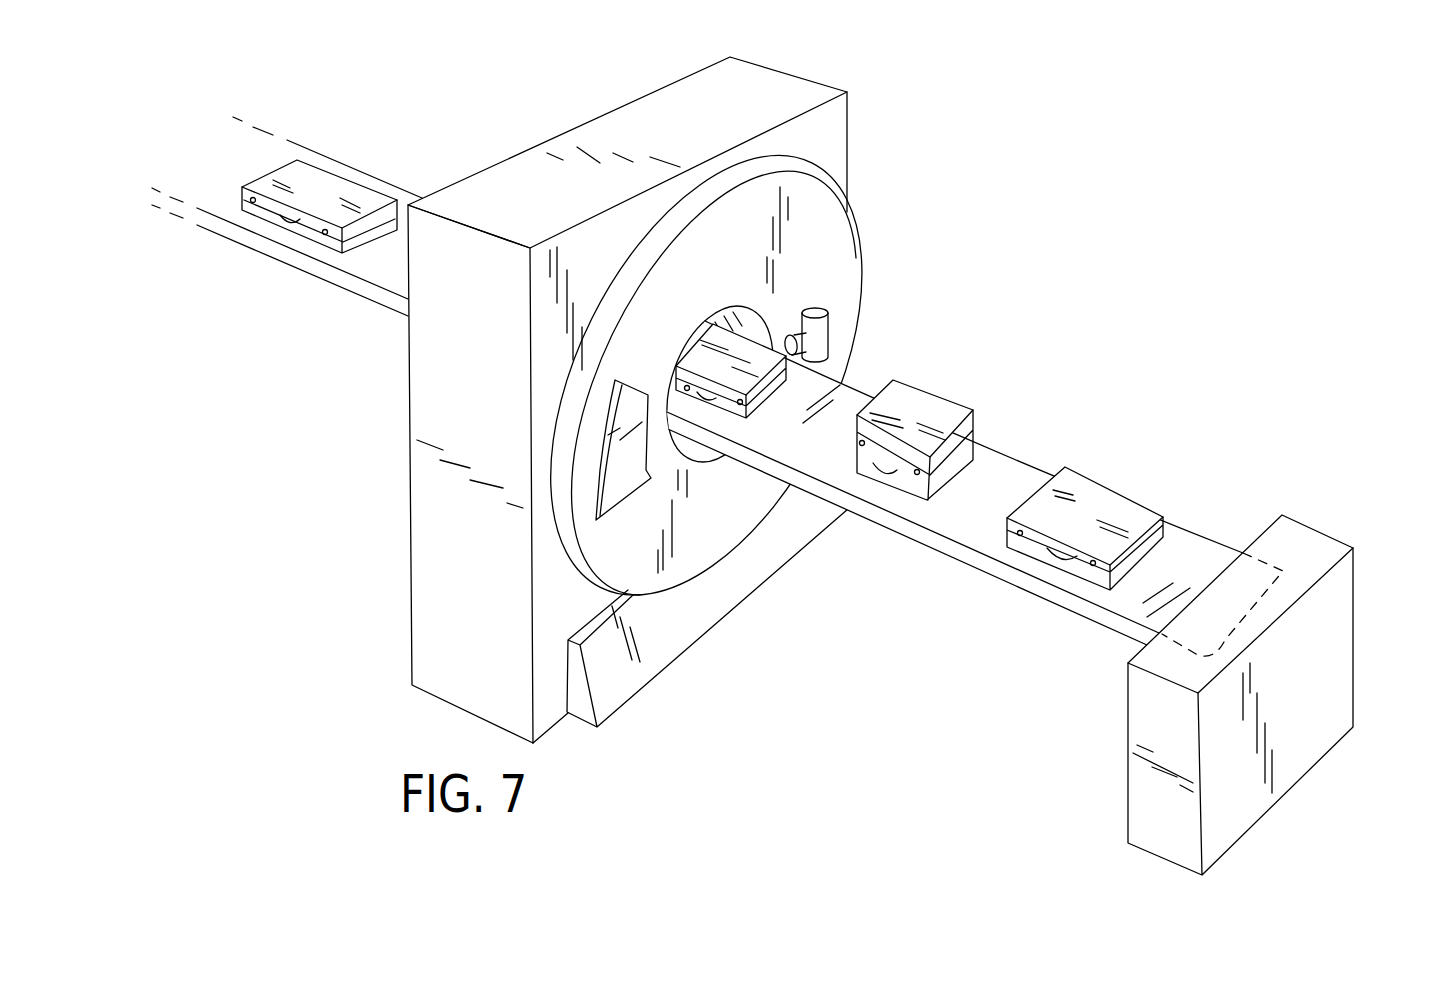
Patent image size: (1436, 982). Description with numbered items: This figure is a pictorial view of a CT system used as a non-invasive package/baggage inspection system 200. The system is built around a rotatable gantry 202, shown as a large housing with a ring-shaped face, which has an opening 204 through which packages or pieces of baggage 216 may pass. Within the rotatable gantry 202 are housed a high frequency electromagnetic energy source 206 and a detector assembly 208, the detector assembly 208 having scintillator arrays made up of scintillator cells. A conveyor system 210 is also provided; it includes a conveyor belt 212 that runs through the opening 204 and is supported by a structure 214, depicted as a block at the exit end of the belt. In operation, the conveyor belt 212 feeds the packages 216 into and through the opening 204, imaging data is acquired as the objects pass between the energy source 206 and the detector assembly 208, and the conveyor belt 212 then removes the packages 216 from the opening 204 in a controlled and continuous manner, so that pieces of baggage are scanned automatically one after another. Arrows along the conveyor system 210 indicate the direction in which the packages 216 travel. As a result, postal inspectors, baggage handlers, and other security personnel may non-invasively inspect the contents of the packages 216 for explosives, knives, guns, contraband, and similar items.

The package/baggage inspection system 200 is at (1130, 258).
The rotatable gantry 202 is at (843, 246).
The opening 204 is at (739, 325).
The high frequency electromagnetic energy source 206 is at (829, 332).
The detector assembly 208 is at (618, 487).
The conveyor system 210 is at (150, 236).
The conveyor belt 212 is at (360, 270).
The structure 214 is at (1338, 653).
The packages or pieces of baggage 216 is at (333, 190).